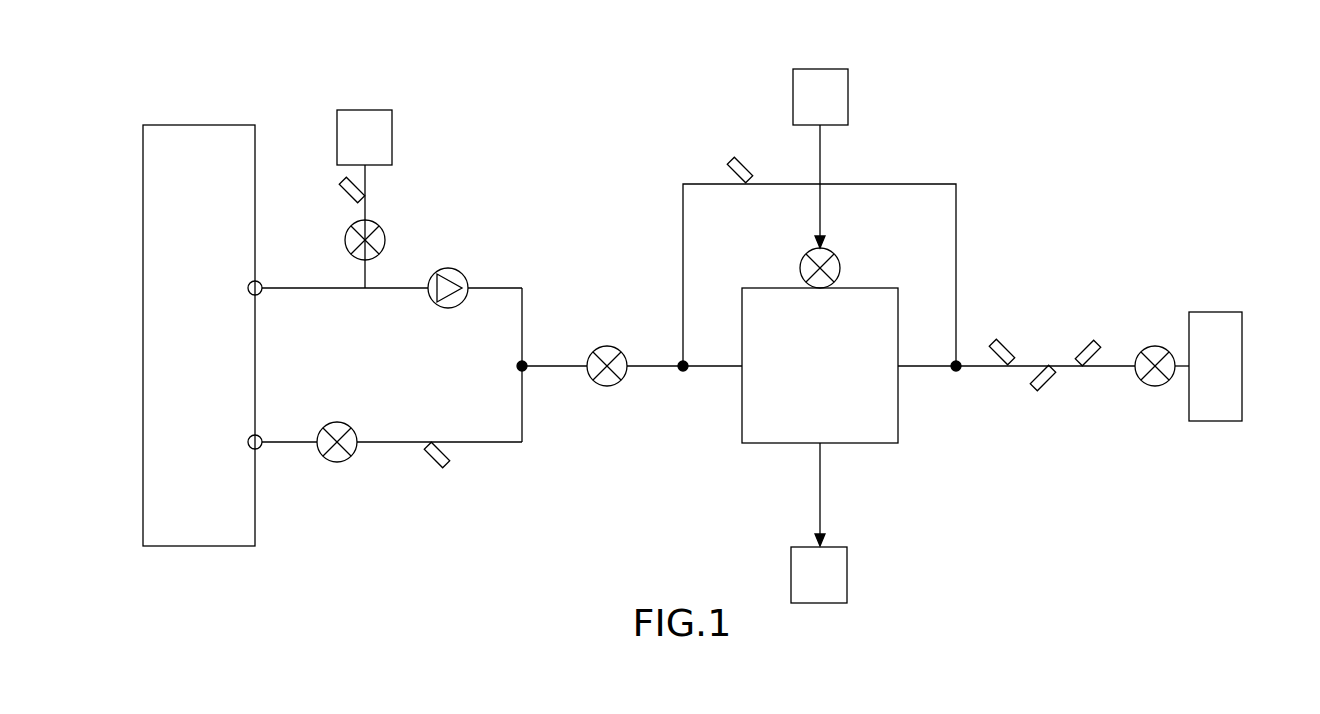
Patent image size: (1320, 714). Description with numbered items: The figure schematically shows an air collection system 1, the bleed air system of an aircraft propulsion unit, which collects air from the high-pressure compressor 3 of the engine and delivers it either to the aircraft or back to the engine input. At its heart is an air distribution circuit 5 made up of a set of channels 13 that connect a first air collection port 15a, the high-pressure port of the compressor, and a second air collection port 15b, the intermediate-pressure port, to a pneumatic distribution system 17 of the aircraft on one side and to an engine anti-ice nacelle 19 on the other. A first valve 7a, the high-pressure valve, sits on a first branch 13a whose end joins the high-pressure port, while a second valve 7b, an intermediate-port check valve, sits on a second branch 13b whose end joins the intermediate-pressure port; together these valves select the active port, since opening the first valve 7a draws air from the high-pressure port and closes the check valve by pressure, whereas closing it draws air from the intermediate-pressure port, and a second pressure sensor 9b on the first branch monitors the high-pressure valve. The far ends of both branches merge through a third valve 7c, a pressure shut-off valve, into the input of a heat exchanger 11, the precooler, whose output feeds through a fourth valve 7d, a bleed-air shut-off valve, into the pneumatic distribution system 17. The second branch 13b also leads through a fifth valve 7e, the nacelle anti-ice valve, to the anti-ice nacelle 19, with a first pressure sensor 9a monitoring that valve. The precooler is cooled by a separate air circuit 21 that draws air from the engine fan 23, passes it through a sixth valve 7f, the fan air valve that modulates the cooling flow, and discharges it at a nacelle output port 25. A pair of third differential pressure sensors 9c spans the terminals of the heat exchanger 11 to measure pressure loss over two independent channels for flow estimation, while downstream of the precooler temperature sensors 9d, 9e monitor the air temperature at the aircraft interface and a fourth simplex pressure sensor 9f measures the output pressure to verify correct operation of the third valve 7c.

The air collection system 1 is at (538, 556).
The high-pressure compressor 3 is at (222, 125).
The air distribution circuit 5 is at (552, 208).
The first valve 7a is at (346, 424).
The second valve 7b is at (456, 270).
The third valve 7c is at (616, 347).
The fourth valve 7d is at (1156, 346).
The fifth valve 7e is at (371, 224).
The sixth valve 7f is at (804, 257).
The first pressure sensor 9a is at (345, 185).
The second pressure sensor 9b is at (434, 466).
The third differential pressure sensors 9c is at (733, 158).
The temperature sensor 9d is at (1037, 387).
The temperature sensor 9e is at (1097, 346).
The fourth simplex pressure sensor 9f is at (1007, 347).
The heat exchanger 11 is at (742, 400).
The set of channels 13 is at (559, 355).
The first branch 13a is at (497, 445).
The second branch 13b is at (307, 288).
The first air collection port 15a is at (250, 450).
The second air collection port 15b is at (250, 283).
The pneumatic distribution system 17 is at (1228, 312).
The engine anti-ice nacelle 19 is at (392, 128).
The air circuit 21 is at (838, 168).
The engine fan 23 is at (848, 88).
The nacelle output port 25 is at (847, 568).